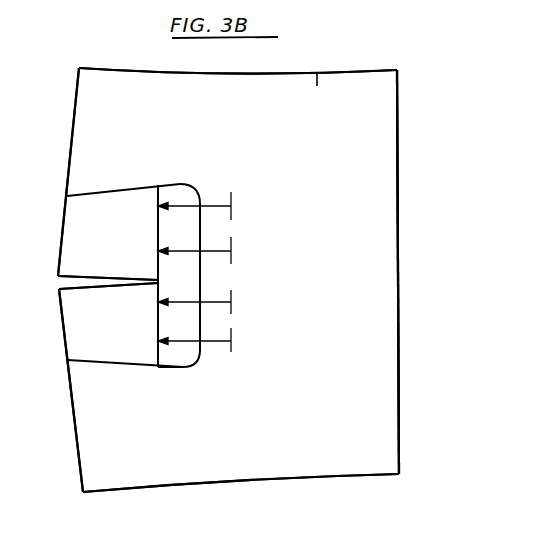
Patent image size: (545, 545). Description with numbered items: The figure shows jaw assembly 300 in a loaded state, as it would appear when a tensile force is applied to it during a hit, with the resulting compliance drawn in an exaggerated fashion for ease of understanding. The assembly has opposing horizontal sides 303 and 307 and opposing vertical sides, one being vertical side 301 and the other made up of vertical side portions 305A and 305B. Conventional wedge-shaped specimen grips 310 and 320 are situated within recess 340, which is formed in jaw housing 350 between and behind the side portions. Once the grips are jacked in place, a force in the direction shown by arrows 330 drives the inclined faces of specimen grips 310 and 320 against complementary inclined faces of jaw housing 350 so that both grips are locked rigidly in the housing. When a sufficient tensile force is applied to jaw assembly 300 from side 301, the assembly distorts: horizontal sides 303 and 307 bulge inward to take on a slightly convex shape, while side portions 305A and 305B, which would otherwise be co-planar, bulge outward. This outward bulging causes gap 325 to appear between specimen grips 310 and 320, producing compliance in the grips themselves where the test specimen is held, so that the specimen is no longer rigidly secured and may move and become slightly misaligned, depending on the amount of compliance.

The jaw assembly 300 is at (412, 86).
The vertical side 301 is at (392, 307).
The horizontal side 303 is at (238, 89).
The vertical side portion 305A is at (73, 139).
The vertical side portion 305B is at (77, 422).
The horizontal side 307 is at (188, 475).
The specimen grip 310 is at (133, 237).
The specimen grip 320 is at (135, 324).
The gap 325 is at (65, 282).
The arrows 330 is at (212, 166).
The recess 340 is at (166, 367).
The jaw housing 350 is at (354, 241).